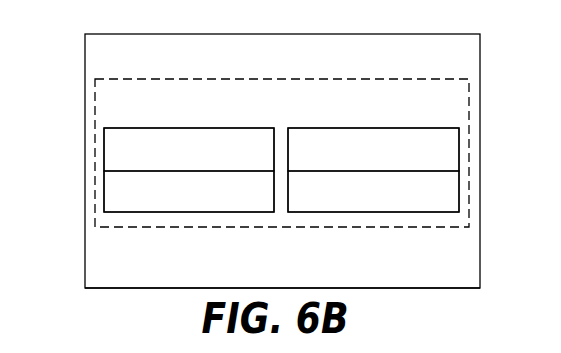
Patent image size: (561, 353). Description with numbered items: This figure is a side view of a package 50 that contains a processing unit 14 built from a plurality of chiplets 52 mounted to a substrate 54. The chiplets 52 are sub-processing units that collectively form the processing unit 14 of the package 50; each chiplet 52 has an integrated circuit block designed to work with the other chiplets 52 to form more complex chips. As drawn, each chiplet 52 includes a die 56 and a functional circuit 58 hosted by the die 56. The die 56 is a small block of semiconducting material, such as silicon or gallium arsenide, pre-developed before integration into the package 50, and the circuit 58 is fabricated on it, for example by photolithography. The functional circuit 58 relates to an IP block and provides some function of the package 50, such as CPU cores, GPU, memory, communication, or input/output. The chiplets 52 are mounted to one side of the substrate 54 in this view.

The package 50 is at (85, 50).
The processing unit 14 is at (95, 92).
The chiplet 52 is at (97, 130).
The functional circuit 58 is at (100, 152).
The die 56 is at (100, 195).
The substrate 54 is at (85, 255).